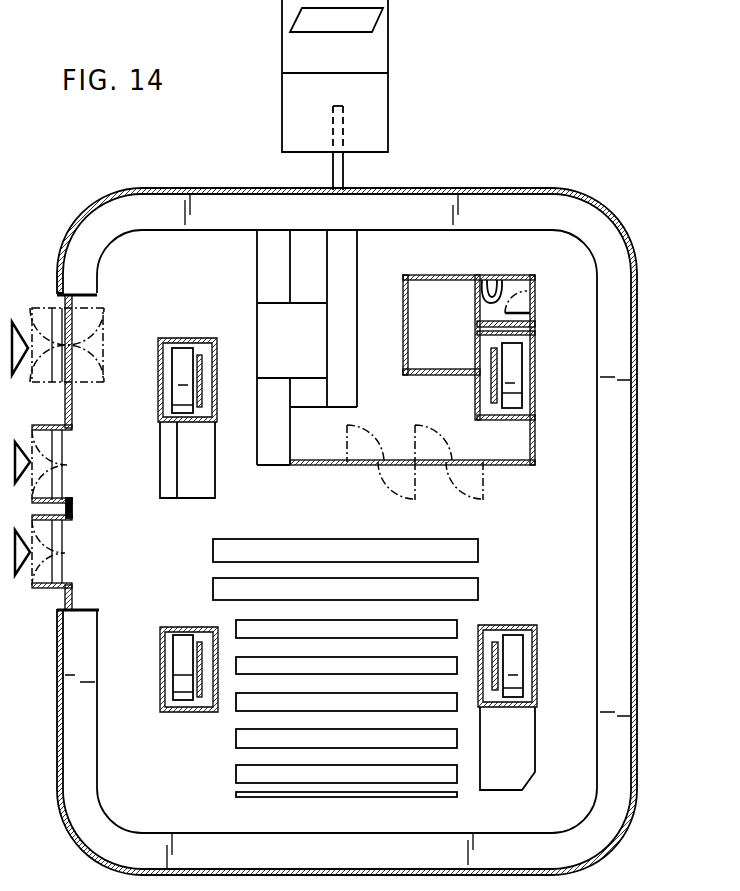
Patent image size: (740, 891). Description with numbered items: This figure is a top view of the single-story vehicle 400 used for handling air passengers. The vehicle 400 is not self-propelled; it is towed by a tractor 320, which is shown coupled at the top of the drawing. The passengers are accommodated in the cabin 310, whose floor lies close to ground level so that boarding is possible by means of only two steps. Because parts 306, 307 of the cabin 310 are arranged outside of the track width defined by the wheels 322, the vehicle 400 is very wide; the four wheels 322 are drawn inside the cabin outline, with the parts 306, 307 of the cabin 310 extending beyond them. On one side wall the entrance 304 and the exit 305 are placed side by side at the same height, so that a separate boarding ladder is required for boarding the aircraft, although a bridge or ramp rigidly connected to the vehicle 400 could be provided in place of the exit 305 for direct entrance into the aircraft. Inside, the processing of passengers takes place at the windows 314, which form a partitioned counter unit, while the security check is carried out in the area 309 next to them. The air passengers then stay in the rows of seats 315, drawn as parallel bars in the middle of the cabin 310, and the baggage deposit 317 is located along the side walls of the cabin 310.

The vehicle 400 is at (470, 107).
The cabin 310 is at (603, 210).
The baggage deposit 317 is at (497, 212).
The area 309 is at (387, 258).
The tractor 320 is at (373, 63).
The windows 314 is at (275, 283).
The part of the cabin 307 is at (585, 472).
The wheels 322 is at (180, 355).
The rows of seats 315 is at (352, 587).
The entrance 304 is at (88, 340).
The exit 305 is at (77, 515).
The part of the cabin 306 is at (148, 707).